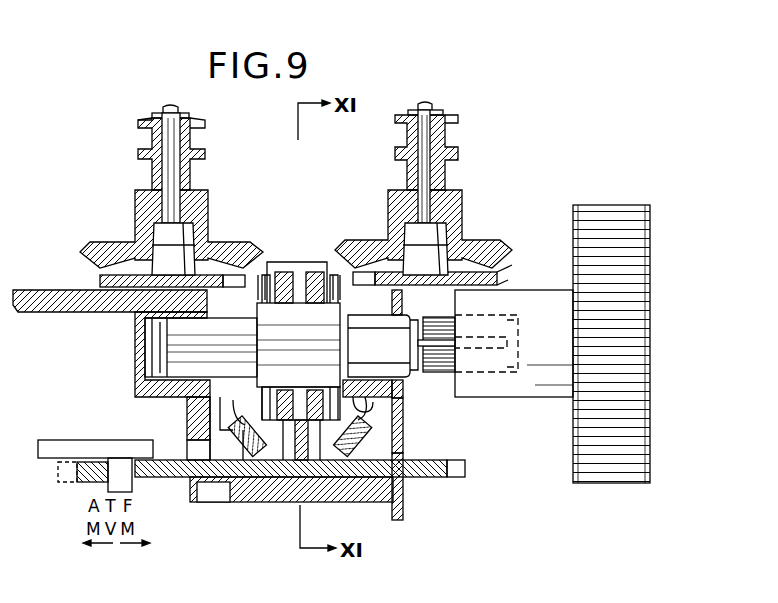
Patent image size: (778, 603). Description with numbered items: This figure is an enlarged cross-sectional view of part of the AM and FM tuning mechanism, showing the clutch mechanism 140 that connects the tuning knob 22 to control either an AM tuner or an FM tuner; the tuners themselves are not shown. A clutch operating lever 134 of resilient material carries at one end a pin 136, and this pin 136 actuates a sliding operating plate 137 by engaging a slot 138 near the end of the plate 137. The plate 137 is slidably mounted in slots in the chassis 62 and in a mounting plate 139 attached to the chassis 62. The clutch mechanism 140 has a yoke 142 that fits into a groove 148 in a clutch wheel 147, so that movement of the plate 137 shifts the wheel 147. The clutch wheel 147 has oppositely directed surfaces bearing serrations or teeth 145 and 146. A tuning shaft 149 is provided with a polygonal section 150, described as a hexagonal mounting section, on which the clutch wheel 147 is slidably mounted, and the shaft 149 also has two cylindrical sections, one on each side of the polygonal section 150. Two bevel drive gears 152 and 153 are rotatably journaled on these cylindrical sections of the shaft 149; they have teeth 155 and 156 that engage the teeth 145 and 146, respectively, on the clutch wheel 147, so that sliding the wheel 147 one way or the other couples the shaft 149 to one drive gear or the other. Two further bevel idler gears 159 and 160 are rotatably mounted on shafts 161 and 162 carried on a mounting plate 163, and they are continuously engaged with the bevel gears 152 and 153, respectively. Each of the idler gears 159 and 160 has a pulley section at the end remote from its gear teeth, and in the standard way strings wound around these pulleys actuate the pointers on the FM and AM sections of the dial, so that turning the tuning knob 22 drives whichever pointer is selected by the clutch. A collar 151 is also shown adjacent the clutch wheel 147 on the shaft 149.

The tuning knob 22 is at (622, 208).
The chassis 62 is at (405, 508).
The clutch operating lever 134 is at (98, 446).
The pin 136 is at (110, 488).
The sliding operating plate 137 is at (203, 473).
The slot 138 is at (140, 484).
The mounting plate 139 is at (404, 433).
The clutch mechanism 140 is at (527, 160).
The yoke 142 is at (286, 448).
The teeth 145 is at (275, 450).
The teeth 146 is at (322, 448).
The clutch wheel 147 is at (322, 394).
The groove 148 is at (300, 298).
The tuning shaft 149 is at (408, 330).
The polygonal section 150 is at (272, 352).
The collar 151 is at (318, 385).
The bevel drive gear 152 is at (210, 397).
The bevel drive gear 153 is at (403, 386).
The teeth 155 is at (255, 292).
The teeth 156 is at (334, 292).
The bevel idler gear 159 is at (145, 247).
The bevel idler gear 160 is at (462, 246).
The shaft 161 is at (170, 134).
The shaft 162 is at (428, 131).
The mounting plate 163 is at (498, 282).